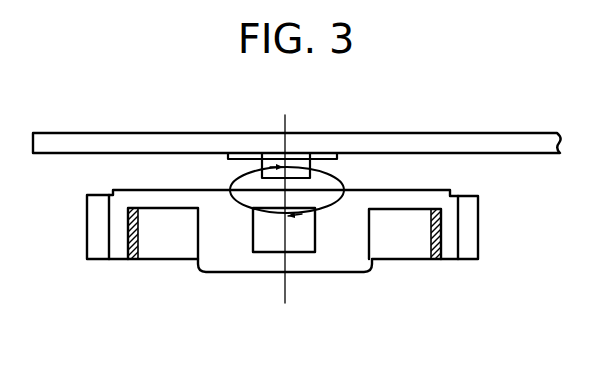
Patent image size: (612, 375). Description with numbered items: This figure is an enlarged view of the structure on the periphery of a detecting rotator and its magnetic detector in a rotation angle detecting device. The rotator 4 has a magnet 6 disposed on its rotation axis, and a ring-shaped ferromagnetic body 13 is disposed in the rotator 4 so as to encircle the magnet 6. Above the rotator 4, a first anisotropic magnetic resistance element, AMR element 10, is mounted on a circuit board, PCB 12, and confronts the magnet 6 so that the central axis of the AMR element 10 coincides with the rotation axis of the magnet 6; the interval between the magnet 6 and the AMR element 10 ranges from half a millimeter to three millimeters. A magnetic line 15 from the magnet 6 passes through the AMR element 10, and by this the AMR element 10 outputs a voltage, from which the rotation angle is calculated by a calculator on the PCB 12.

The rotator 4 is at (227, 263).
The magnet 6 is at (310, 257).
The first anisotropic magnetic resistance (AMR) element 10 is at (296, 158).
The circuit board (PCB) 12 is at (415, 147).
The ring-shaped ferromagnetic body 13 is at (131, 258).
The magnetic line 15 is at (232, 180).